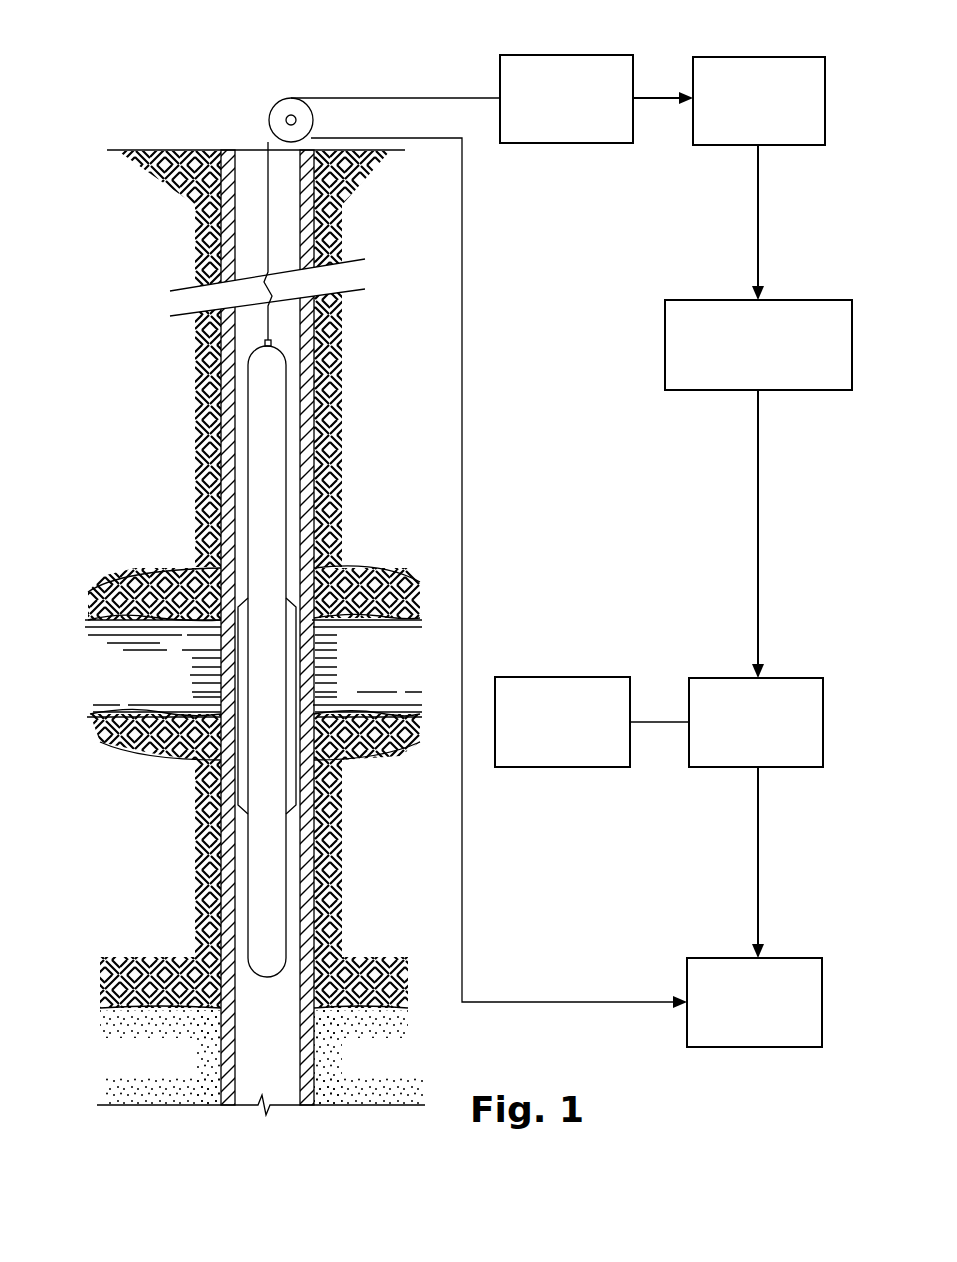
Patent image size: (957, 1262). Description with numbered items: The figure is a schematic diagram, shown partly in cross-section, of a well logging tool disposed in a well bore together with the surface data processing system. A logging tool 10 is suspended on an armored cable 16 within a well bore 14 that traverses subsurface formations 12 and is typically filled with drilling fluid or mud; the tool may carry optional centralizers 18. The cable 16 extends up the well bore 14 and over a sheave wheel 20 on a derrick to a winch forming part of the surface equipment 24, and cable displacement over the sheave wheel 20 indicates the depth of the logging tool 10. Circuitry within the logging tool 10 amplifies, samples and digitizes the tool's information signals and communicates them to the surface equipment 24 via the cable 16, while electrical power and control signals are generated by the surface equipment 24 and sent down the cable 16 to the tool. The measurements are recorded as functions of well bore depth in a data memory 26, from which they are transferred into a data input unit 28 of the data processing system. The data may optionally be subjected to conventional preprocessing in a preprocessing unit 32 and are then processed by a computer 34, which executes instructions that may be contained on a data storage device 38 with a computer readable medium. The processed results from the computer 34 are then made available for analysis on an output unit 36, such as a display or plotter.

The logging tool 10 is at (248, 415).
The subsurface formations 12 is at (90, 618).
The well bore 14 is at (236, 238).
The armored cable 16 is at (268, 327).
The centralizers 18 is at (315, 578).
The sheave wheel 20 is at (276, 108).
The surface equipment 24 is at (693, 38).
The data memory 26 is at (581, 145).
The data input unit 28 is at (728, 147).
The preprocessing unit 32 is at (665, 368).
The computer 34 is at (722, 678).
The output unit 36 is at (745, 1047).
The data storage device 38 is at (574, 677).